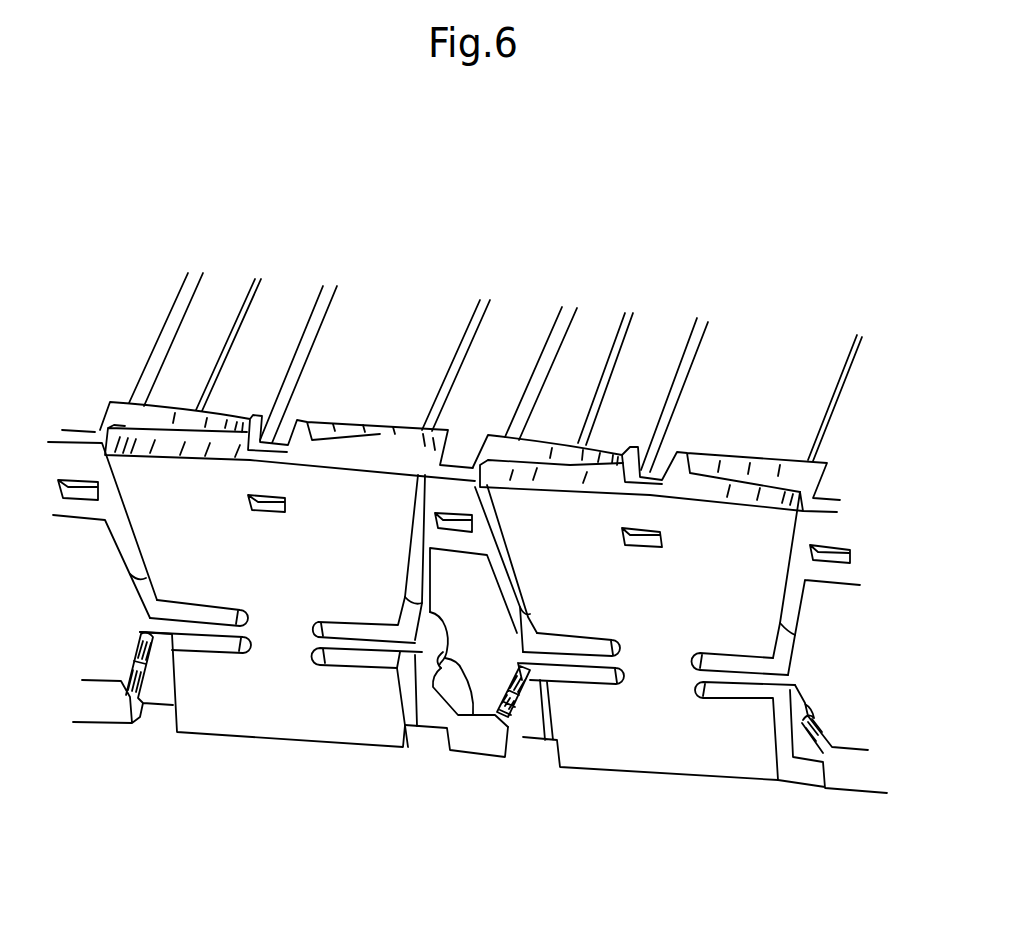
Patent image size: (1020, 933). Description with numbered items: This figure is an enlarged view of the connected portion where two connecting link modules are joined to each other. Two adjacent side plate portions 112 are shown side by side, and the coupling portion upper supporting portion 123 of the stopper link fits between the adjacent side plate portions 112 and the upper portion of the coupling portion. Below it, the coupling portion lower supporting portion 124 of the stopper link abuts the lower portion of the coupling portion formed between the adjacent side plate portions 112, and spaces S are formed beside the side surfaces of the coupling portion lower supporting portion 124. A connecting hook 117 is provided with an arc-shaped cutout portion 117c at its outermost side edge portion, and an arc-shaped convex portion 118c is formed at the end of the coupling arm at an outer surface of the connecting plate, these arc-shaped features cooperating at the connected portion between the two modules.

The side plate portion 112 is at (250, 713).
The coupling portion upper supporting portion 123 is at (437, 497).
The arc-shaped convex portion 118c is at (422, 645).
The coupling portion lower supporting portion 124 is at (440, 745).
The arc-shaped cutout portion 117c is at (473, 715).
The connecting hook 117 is at (485, 700).
The space S is at (427, 738).